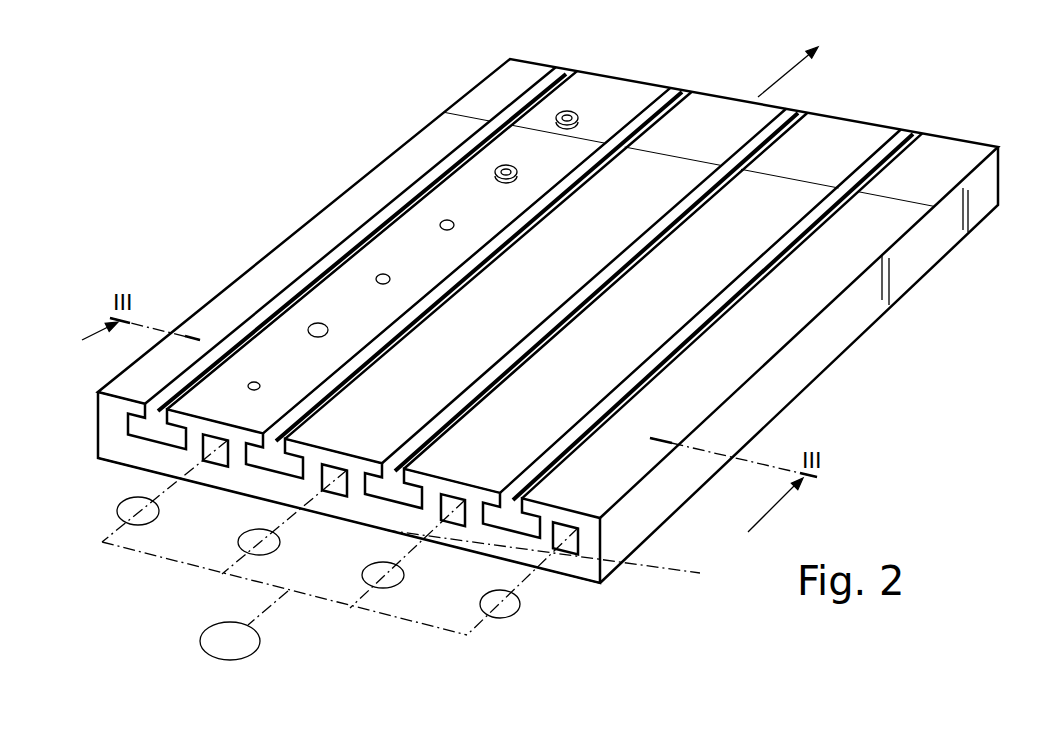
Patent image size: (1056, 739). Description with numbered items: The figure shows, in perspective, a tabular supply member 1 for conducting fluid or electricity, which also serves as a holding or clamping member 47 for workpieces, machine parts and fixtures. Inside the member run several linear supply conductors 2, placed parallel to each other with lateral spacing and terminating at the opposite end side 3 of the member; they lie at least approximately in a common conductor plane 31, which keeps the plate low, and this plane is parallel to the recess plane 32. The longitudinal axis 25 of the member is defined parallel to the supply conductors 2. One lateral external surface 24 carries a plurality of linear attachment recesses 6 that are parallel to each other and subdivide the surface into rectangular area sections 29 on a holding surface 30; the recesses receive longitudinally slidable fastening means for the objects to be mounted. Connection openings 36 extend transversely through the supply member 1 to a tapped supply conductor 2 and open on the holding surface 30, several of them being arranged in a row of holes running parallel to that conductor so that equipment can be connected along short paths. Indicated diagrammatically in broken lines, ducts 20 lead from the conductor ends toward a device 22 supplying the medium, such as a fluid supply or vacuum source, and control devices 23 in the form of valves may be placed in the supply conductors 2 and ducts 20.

The supply member 1 is at (710, 115).
The supply conductor 2 is at (322, 480).
The side of the member 3 is at (362, 507).
The attachment recess 6 is at (548, 80).
The ducts 20 is at (165, 560).
The device for supplying medium 22 is at (258, 645).
The control device 23 is at (242, 540).
The lateral external surface 24 is at (845, 130).
The longitudinal axis 25 is at (773, 77).
The area section 29 is at (492, 98).
The holding surface 30 is at (602, 88).
The conductor plane 31 is at (1003, 165).
The recess plane 32 is at (683, 570).
The connection opening 36 is at (254, 382).
The clamping member 47 is at (872, 300).